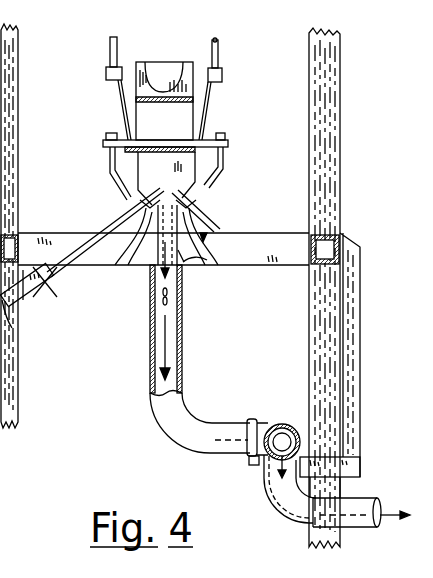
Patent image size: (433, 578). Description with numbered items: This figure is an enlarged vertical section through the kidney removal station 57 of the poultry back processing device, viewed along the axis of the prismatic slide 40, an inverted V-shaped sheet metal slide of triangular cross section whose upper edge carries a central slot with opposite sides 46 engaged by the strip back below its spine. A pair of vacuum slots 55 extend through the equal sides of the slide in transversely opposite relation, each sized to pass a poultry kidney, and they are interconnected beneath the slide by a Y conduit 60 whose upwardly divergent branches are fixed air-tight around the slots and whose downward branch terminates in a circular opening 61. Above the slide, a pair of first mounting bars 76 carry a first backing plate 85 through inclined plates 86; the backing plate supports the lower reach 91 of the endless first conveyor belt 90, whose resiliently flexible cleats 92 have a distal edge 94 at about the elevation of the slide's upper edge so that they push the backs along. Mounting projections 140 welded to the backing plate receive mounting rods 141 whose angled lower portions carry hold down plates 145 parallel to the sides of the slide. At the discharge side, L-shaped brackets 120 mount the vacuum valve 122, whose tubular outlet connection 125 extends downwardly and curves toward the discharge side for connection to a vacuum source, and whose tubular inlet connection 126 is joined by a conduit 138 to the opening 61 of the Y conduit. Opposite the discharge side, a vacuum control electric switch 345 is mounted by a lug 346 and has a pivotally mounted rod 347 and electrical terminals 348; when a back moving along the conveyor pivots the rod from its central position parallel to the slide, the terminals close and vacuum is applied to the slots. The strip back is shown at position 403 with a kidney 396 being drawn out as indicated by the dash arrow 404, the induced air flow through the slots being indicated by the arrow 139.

The prismatic slide 40 is at (232, 246).
The opposite sides of the slot 46 is at (168, 190).
The vacuum slots 55 is at (207, 216).
The kidney removing station 57 is at (355, 140).
The "Y" conduit 60 is at (207, 258).
The circular opening 61 is at (184, 262).
The first mounting bars 76 is at (106, 74).
The first backing plate 85 is at (178, 140).
The inclined plates 86 is at (119, 99).
The first conveyor belt 90 is at (157, 61).
The lower reach 91 is at (223, 156).
The cleats 92 is at (182, 62).
The distal edge 94 is at (143, 62).
The L-shaped brackets 120 is at (357, 372).
The vacuum valve 122 is at (298, 420).
The tubular outlet connection 125 is at (253, 421).
The tubular inlet connection 126 is at (262, 466).
The conduit 138 is at (150, 398).
The arrow 139 is at (143, 262).
The mounting projections 140 is at (127, 134).
The mounting rod 141 is at (110, 155).
The hold down plates 145 is at (132, 202).
The vacuum control electric switch 345 is at (43, 297).
The lug 346 is at (23, 300).
The mounting rod 347 is at (110, 218).
The electrical terminals 348 is at (12, 328).
The kidneys 396 is at (168, 300).
The position of the strip back in the kidney removal station 403 is at (225, 187).
The dash arrow 404 is at (163, 330).